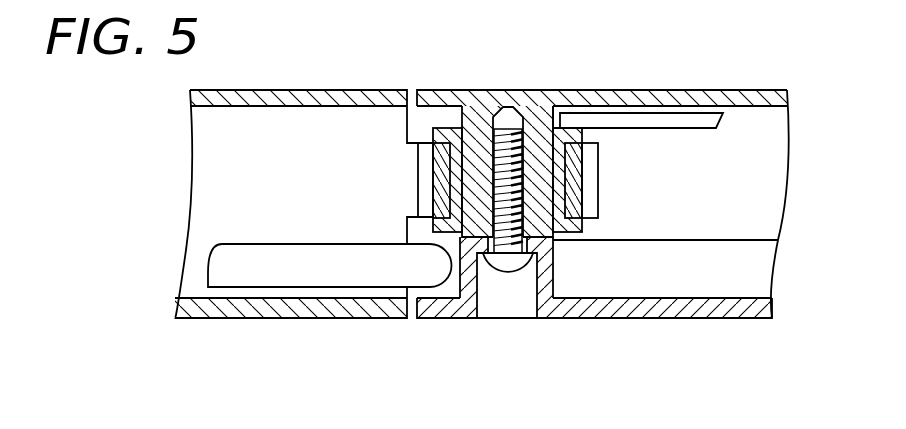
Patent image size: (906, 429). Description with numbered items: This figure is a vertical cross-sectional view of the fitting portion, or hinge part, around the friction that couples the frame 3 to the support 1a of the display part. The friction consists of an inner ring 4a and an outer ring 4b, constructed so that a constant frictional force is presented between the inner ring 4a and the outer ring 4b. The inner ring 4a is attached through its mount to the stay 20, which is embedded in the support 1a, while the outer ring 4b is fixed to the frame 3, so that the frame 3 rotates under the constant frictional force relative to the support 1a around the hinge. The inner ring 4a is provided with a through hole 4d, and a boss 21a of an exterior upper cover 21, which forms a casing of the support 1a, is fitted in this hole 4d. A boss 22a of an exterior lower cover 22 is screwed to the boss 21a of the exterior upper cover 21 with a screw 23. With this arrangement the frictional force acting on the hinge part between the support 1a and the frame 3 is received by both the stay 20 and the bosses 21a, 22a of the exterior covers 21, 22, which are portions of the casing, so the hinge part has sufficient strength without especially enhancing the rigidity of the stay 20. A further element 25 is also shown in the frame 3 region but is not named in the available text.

The support 1a is at (723, 335).
The frame 3 is at (298, 98).
The inner ring 4a is at (568, 135).
The outer ring 4b is at (578, 205).
The through hole 4d is at (450, 128).
The stay 20 is at (713, 122).
The exterior upper cover 21 is at (723, 102).
The boss 21a is at (483, 108).
The exterior lower cover 22 is at (560, 312).
The boss 22a is at (481, 293).
The screw 23 is at (519, 127).
The insertion pin 25 is at (258, 270).